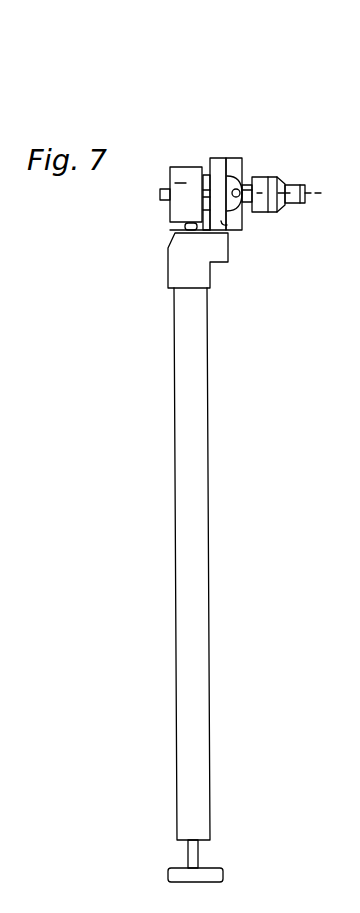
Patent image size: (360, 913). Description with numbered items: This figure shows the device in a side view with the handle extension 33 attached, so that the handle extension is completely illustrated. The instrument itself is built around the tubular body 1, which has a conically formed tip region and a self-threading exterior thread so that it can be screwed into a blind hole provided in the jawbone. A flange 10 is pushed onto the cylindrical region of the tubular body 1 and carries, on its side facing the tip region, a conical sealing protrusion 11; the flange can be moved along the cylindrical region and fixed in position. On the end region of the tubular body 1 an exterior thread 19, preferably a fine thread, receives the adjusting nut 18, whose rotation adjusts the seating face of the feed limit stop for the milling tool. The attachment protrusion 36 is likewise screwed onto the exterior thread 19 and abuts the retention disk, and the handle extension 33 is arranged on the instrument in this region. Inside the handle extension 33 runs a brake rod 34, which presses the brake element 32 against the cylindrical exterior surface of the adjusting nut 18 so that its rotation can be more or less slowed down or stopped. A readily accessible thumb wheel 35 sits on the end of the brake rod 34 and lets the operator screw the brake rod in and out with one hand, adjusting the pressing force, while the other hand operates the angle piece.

The tubular body 1 is at (252, 165).
The flange 10 is at (267, 213).
The conical sealing protrusion 11 is at (283, 210).
The adjusting nut 18 is at (168, 180).
The exterior thread 19 is at (205, 175).
The brake element 32 is at (183, 227).
The handle extension 33 is at (180, 274).
The brake rod 34 is at (200, 852).
The thumb wheel 35 is at (167, 872).
The attachment protrusion 36 is at (228, 228).